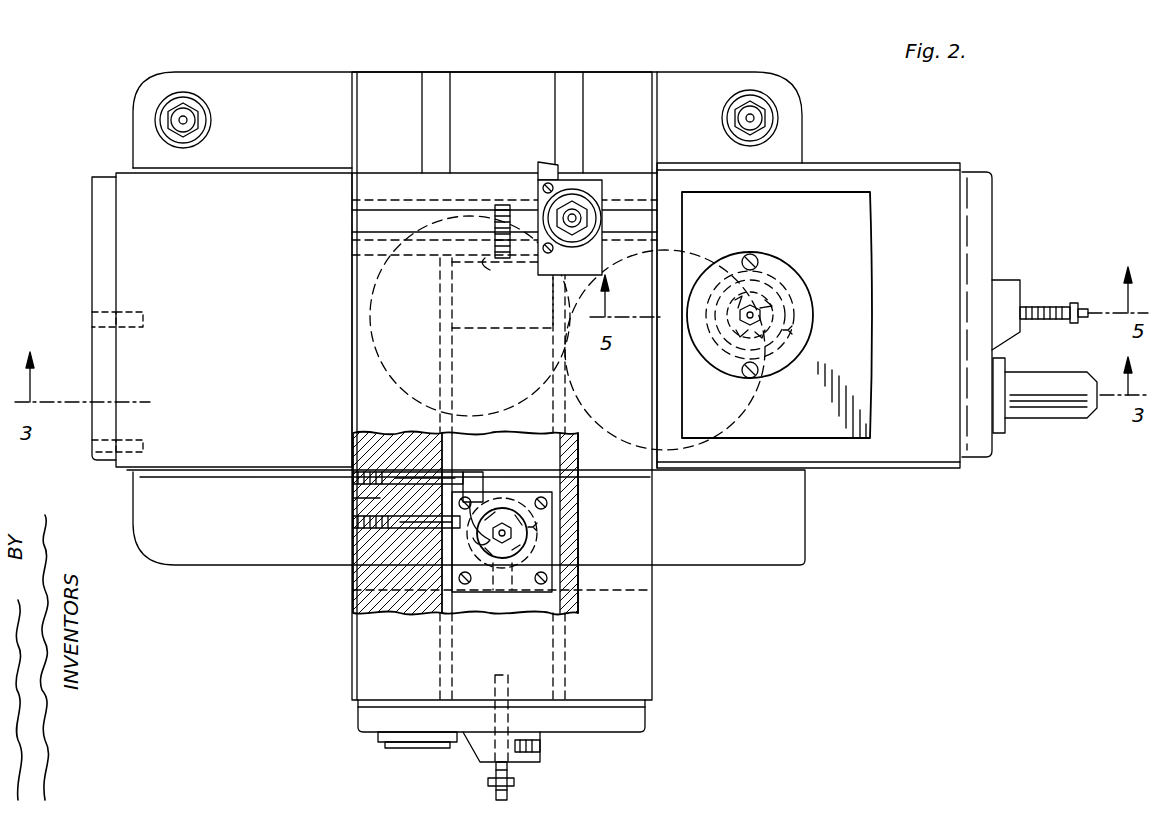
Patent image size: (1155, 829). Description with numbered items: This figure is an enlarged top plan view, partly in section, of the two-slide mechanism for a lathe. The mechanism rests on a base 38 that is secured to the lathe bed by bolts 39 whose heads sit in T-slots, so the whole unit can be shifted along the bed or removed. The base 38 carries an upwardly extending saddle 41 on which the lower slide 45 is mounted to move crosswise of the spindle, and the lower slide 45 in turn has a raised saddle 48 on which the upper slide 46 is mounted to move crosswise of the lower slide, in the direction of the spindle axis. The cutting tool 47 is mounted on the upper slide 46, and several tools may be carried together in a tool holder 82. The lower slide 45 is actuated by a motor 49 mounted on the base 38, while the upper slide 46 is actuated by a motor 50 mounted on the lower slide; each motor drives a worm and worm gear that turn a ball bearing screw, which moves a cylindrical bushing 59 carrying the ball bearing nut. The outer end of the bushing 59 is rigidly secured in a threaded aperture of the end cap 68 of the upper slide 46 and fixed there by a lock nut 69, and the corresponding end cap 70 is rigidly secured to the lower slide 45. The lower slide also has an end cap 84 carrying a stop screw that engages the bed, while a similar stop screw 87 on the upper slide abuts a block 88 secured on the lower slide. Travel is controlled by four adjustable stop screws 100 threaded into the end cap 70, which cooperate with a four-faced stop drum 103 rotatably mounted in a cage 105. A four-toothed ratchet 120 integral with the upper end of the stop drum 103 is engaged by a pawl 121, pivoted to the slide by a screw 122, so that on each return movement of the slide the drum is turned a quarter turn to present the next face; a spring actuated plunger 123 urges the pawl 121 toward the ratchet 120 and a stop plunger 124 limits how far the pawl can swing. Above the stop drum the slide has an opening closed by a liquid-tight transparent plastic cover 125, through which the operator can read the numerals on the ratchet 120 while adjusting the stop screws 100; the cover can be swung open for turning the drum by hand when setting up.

The base 38 is at (200, 562).
The bolts 39 is at (183, 108).
The saddle 41 is at (150, 248).
The lower slide 45 is at (120, 172).
The upper slide 46 is at (352, 395).
The cutting tool 47 is at (545, 163).
The saddle 48 is at (402, 85).
The motor 49 is at (703, 460).
The motor 50 is at (350, 280).
The cylindrical bushing 59 is at (1045, 420).
The end cap 68 is at (590, 725).
The lock nut 69 is at (408, 742).
The end cap 70 is at (985, 200).
The tool holder 82 is at (614, 186).
The end cap 84 is at (98, 292).
The stop screw 87 is at (477, 275).
The block 88 is at (475, 328).
The stop screws 100 is at (1062, 300).
The stop drum 103 is at (790, 330).
The cage 105 is at (540, 600).
The ratchet 120 is at (770, 308).
The pawl 121 is at (483, 482).
The screw 122 is at (352, 498).
The spring actuated plunger 123 is at (353, 550).
The stop plunger 124 is at (355, 450).
The transparent plastic cover 125 is at (780, 268).